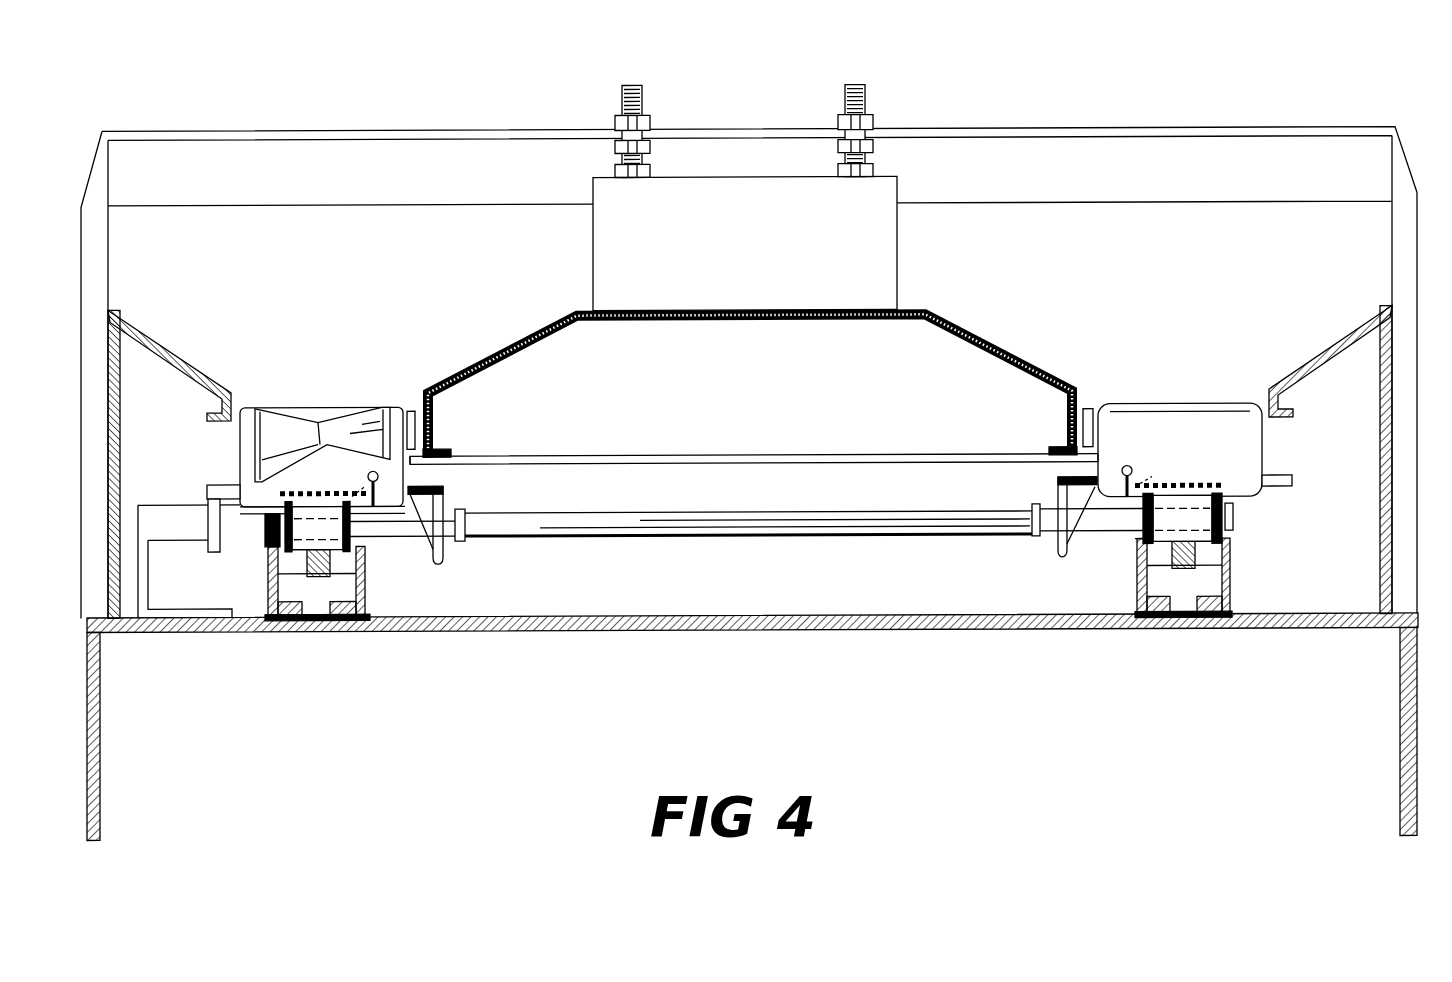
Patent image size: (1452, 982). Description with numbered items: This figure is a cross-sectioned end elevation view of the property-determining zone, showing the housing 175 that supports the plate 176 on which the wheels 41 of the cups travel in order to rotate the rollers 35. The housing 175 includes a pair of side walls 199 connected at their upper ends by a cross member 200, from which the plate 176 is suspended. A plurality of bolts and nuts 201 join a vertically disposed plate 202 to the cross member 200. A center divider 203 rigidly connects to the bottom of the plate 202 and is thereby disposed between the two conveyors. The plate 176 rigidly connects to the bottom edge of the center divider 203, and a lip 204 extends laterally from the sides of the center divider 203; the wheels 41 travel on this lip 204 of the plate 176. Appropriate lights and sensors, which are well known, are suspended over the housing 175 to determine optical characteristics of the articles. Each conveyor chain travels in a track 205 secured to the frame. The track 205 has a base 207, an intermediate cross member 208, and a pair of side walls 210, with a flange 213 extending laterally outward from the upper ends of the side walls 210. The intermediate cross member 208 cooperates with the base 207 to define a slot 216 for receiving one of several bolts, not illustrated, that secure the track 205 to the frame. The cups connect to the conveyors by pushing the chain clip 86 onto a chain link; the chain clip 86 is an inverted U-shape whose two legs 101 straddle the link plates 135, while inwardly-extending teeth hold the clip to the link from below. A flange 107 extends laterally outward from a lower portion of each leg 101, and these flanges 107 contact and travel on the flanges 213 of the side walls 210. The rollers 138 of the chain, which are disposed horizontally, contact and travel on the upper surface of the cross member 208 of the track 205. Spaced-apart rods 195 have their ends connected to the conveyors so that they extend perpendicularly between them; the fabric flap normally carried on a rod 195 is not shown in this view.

The housing 175 is at (1252, 107).
The cross member 200 is at (1010, 152).
The side walls 199 is at (1392, 267).
The bolts and nuts 201 is at (865, 105).
The vertically disposed plate 202 is at (885, 230).
The center divider 203 is at (1065, 372).
The plate 176 is at (668, 460).
The lip 204 is at (413, 462).
The wheels 41 is at (413, 407).
The rollers 35 is at (365, 413).
The chain clip 86 is at (1185, 490).
The rods 195 is at (575, 520).
The track 205 is at (345, 558).
The flange 107 is at (1237, 533).
The side walls 210 is at (268, 570).
The intermediate cross member 208 is at (312, 575).
The slot 216 is at (272, 630).
The rollers 138 is at (1230, 562).
The plates 135 is at (1135, 557).
The legs 101 is at (1233, 512).
The base 207 is at (360, 633).
The flange 213 is at (267, 547).